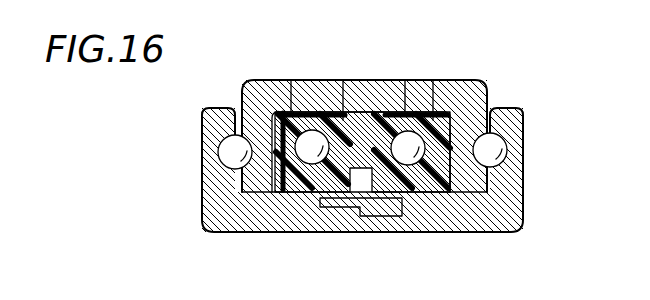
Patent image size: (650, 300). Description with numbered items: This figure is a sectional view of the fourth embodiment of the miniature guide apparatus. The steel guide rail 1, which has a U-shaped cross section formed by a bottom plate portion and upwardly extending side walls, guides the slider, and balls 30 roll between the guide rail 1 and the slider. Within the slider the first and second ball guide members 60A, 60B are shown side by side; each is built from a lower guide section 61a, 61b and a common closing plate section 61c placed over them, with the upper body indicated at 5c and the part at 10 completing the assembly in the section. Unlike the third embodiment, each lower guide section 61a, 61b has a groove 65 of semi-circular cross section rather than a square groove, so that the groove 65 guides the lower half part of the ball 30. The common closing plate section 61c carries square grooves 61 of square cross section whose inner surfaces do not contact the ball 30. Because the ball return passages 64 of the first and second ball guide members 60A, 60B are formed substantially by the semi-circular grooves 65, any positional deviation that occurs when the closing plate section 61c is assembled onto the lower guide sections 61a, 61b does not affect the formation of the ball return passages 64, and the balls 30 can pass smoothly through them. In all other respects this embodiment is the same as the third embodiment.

The guide rail 1 is at (513, 202).
The cover block 5c is at (473, 80).
The top plate 10 is at (335, 88).
The ball 30 is at (232, 152).
The first ball guide member 60A is at (264, 197).
The second ball guide member 60B is at (377, 208).
The square groove 61 is at (306, 120).
The lower guide section 61a is at (313, 165).
The lower guide section 61b is at (438, 192).
The common closing plate section 61c is at (281, 118).
The ball return passage 64 is at (462, 128).
The groove of semi-circular cross section 65 is at (307, 162).